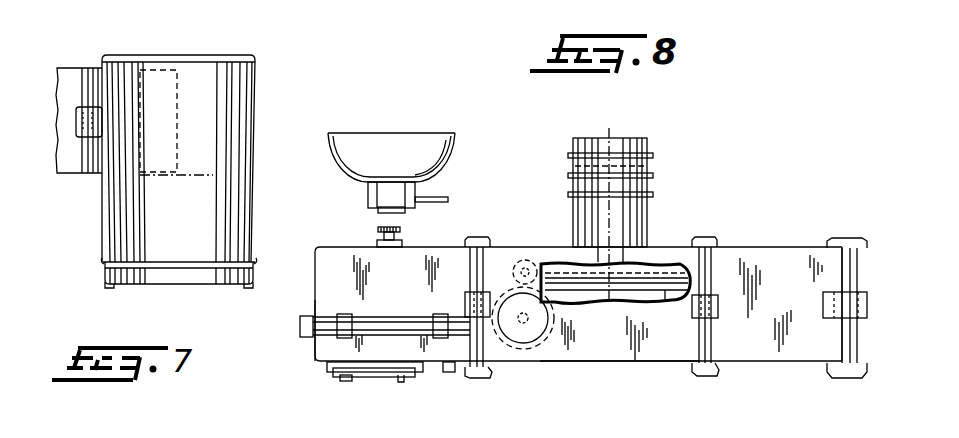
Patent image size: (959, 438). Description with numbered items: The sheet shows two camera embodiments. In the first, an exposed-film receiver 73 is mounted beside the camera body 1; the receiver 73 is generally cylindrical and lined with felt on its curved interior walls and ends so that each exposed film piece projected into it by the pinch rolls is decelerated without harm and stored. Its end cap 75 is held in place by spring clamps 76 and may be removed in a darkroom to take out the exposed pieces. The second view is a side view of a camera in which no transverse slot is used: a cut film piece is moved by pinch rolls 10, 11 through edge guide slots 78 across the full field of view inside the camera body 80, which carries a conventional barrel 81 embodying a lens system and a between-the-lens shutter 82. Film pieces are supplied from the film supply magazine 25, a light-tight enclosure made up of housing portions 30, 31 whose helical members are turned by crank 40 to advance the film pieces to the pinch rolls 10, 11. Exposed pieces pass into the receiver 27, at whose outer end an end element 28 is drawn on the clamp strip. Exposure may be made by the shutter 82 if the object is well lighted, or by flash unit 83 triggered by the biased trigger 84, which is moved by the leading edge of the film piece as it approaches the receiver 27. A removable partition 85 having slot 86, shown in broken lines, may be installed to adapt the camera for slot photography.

In FIG. 7, the camera body 1 is at (66, 66).
In FIG. 7, the receiver 73 is at (252, 73).
In FIG. 7, the end cap 75 is at (200, 286).
In FIG. 7, the spring clamps 76 is at (256, 286).
In FIG. 8, the pinch roll 10 is at (538, 352).
In FIG. 8, the pinch roll 11 is at (518, 262).
In FIG. 8, the film supply magazine 25 is at (316, 366).
In FIG. 8, the receiver 27 is at (773, 364).
In FIG. 8, the end clamp 28 is at (840, 335).
In FIG. 8, the housing portion 30 is at (313, 354).
In FIG. 8, the housing portion 31 is at (334, 246).
In FIG. 8, the crank 40 is at (372, 378).
In FIG. 8, the edge guide slots 78 is at (668, 300).
In FIG. 8, the camera body 80 is at (603, 362).
In FIG. 8, the barrel 81 is at (650, 222).
In FIG. 8, the between-the-lens shutter 82 is at (654, 168).
In FIG. 8, the flash unit 83 is at (454, 148).
In FIG. 8, the biased trigger 84 is at (663, 266).
In FIG. 8, the removable partition 85 is at (578, 262).
In FIG. 8, the slot 86 is at (604, 238).